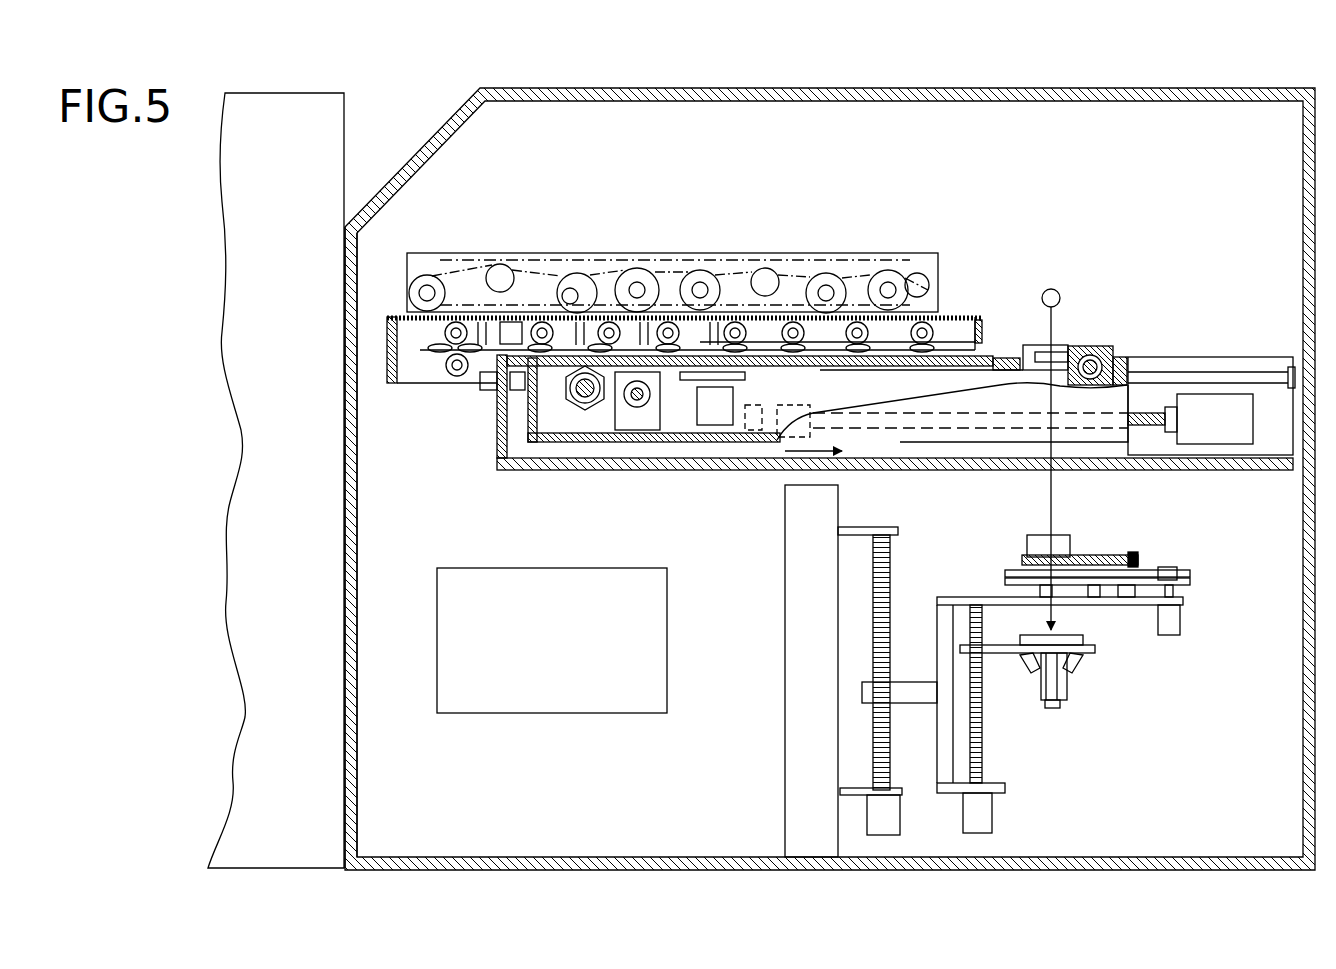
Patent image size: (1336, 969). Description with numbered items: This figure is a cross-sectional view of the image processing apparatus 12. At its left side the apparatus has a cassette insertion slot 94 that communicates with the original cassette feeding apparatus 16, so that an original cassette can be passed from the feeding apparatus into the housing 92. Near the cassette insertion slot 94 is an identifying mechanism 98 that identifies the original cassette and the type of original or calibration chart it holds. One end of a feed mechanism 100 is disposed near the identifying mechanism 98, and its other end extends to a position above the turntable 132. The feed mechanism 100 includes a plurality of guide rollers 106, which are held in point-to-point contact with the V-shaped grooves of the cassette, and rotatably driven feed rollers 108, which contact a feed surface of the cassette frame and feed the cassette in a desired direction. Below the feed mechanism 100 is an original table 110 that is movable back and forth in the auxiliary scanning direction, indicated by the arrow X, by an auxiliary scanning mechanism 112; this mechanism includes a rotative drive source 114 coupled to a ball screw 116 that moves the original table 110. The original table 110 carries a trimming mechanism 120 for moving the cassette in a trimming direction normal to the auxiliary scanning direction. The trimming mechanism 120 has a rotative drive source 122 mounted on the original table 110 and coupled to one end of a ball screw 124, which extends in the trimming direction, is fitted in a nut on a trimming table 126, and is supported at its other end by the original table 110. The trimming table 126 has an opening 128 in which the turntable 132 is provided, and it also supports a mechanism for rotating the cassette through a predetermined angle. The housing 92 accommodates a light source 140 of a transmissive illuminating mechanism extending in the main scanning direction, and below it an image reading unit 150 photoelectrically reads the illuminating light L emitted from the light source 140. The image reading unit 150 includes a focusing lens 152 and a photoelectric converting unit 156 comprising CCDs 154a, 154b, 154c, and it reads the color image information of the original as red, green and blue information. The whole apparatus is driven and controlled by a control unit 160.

The image processing apparatus 12 is at (563, 88).
The original cassette feeding apparatus 16 is at (290, 90).
The housing 92 is at (357, 590).
The cassette insertion slot 94 is at (345, 352).
The identifying mechanism 98 is at (488, 384).
The feed mechanism 100 is at (628, 252).
The guide rollers 106 is at (438, 350).
The feed rollers 108 is at (533, 340).
The original table 110 is at (522, 425).
The auxiliary scanning mechanism 112 is at (1196, 386).
The rotative drive source 114 is at (1232, 445).
The ball screw 116 is at (1144, 428).
The trimming mechanism 120 is at (612, 420).
The rotative drive source 122 is at (640, 432).
The ball screw 124 is at (646, 400).
The trimming table 126 is at (570, 393).
The opening 128 is at (1036, 350).
The turntable 132 is at (1000, 352).
The light source 140 is at (1058, 290).
The illuminating light L is at (1068, 500).
The image reading unit 150 is at (1192, 612).
The focusing lens 152 is at (1070, 546).
The CCD 154a is at (1025, 672).
The CCD 154b is at (1061, 708).
The CCD 154c is at (1082, 670).
The photoelectric converting unit 156 is at (1082, 674).
The control unit 160 is at (607, 706).